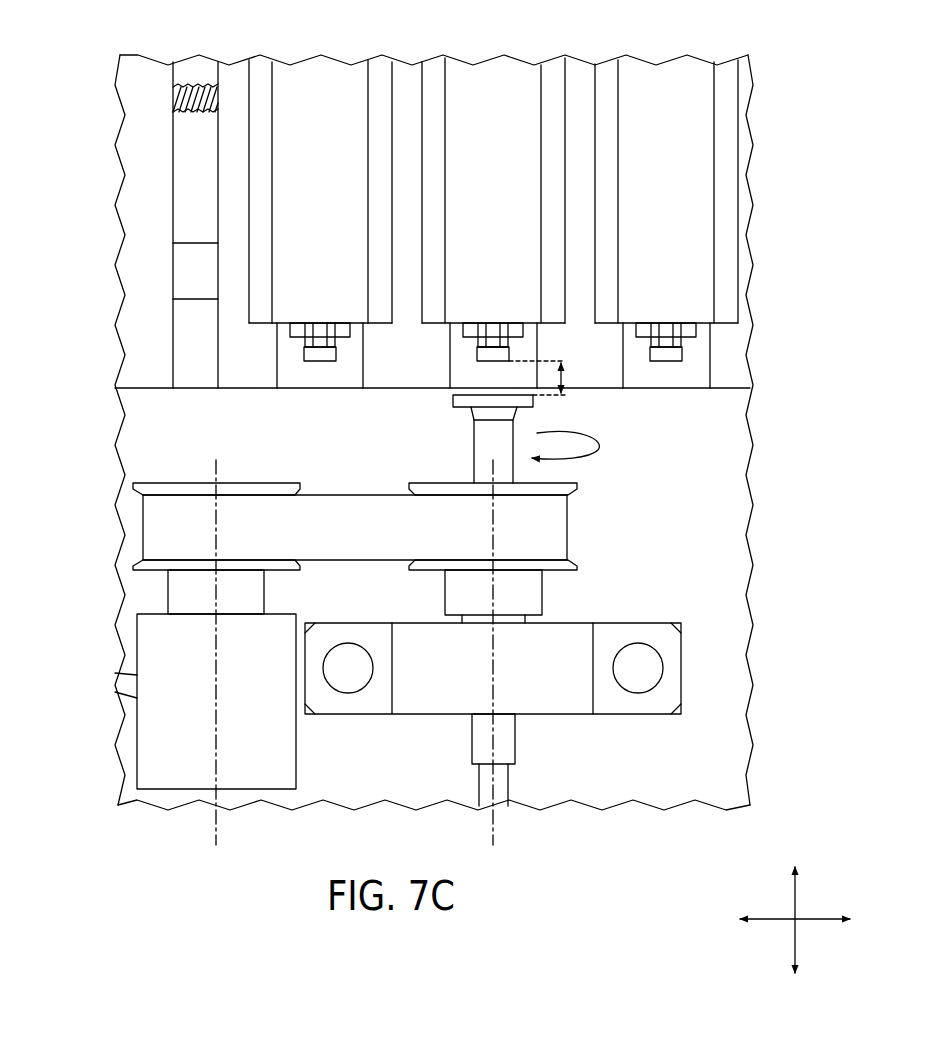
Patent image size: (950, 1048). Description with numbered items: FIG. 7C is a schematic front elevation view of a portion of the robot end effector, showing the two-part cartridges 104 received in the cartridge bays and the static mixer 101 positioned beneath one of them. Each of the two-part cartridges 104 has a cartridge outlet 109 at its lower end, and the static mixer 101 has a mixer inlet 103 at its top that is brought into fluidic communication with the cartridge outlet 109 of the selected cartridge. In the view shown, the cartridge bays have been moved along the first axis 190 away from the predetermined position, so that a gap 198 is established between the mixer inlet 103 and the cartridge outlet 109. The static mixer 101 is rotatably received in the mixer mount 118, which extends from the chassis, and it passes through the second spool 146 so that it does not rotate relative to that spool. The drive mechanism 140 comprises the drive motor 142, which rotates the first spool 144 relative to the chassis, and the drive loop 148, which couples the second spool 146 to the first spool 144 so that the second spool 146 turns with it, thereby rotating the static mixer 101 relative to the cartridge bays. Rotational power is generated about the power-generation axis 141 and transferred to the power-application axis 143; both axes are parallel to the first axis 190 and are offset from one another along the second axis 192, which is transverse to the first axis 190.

The static mixer 101 is at (515, 742).
The mixer inlet 103 is at (445, 400).
The two-part cartridges 104 is at (488, 198).
The cartridge outlet 109 is at (465, 350).
The mixer mount 118 is at (422, 715).
The drive mechanism 140 is at (96, 486).
The power-generation axis 141 is at (217, 826).
The drive motor 142 is at (296, 740).
The power-application axis 143 is at (494, 826).
The first spool 144 is at (135, 570).
The second spool 146 is at (543, 593).
The drive loop 148 is at (360, 562).
The first axis 190 is at (795, 890).
The second axis 192 is at (815, 918).
The gap 198 is at (563, 378).